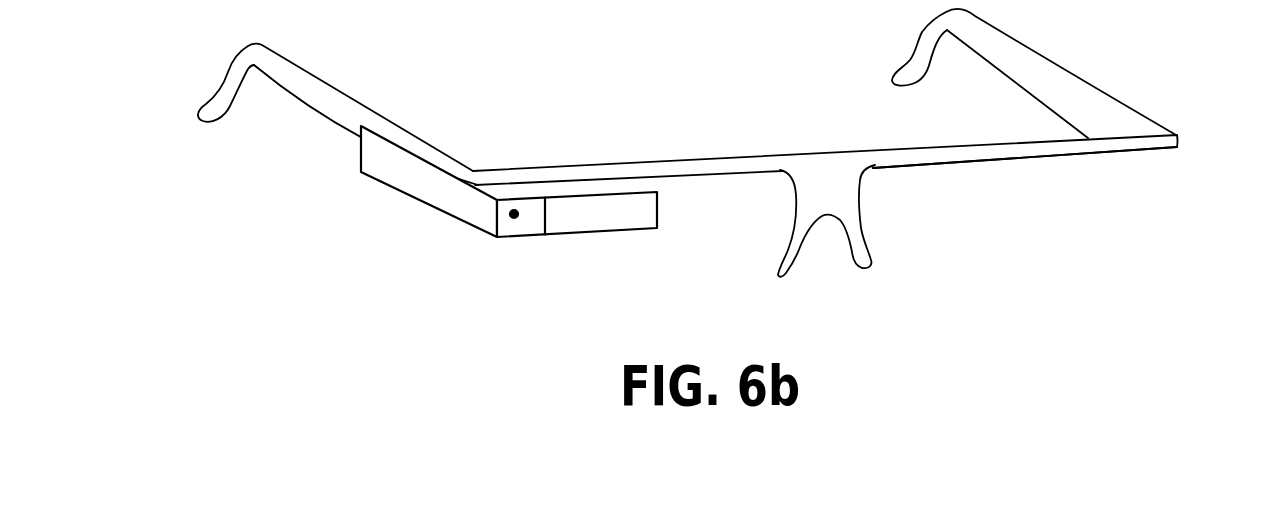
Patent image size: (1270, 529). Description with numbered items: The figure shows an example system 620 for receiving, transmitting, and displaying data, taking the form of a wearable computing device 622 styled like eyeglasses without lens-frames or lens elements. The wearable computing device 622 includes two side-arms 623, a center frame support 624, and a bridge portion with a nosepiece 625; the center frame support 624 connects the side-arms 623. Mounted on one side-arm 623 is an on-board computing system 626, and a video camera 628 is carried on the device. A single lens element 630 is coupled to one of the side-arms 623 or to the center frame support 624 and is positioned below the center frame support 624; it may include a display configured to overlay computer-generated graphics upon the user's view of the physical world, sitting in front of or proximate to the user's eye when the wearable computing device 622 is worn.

The system 620 is at (723, 145).
The wearable computing device 622 is at (723, 143).
The side-arms 623 is at (317, 93).
The center frame support 624 is at (710, 165).
The nosepiece 625 is at (853, 210).
The on-board computing system 626 is at (519, 204).
The video camera 628 is at (513, 220).
The single lens element 630 is at (605, 232).